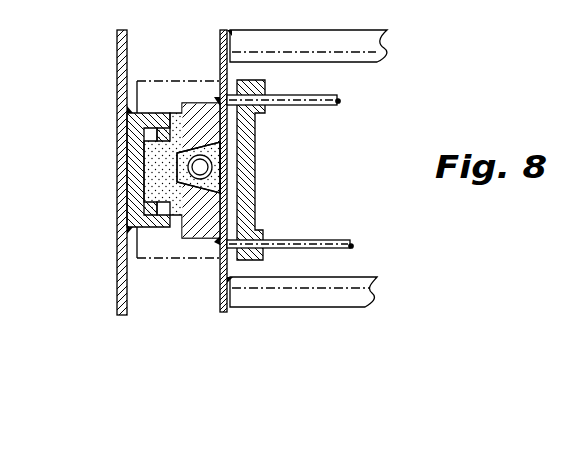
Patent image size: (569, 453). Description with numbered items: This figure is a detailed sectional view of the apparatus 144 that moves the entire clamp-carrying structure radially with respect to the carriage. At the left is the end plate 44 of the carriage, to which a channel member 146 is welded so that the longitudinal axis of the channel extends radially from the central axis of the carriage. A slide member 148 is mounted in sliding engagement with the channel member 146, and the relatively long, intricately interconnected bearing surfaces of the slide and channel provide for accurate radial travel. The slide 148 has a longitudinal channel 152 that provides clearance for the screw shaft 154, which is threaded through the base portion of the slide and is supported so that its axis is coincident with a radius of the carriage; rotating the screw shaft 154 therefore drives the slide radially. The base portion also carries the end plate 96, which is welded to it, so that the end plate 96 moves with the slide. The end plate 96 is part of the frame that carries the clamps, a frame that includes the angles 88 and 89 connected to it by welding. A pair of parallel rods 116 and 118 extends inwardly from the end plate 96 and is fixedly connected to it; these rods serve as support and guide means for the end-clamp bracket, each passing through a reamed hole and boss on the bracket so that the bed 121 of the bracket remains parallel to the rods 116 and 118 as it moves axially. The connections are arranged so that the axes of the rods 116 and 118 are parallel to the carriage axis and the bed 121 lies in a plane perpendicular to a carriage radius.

The end plate 44 is at (117, 96).
The angle 88 is at (388, 45).
The angle 89 is at (355, 295).
The end plate 96 is at (219, 68).
The rod 116 is at (327, 98).
The rod 118 is at (333, 240).
The bed 121 is at (153, 81).
The apparatus 144 is at (114, 247).
The channel member 146 is at (130, 196).
The slide member 148 is at (193, 238).
The longitudinal channel 152 is at (213, 189).
The screw shaft 154 is at (204, 166).